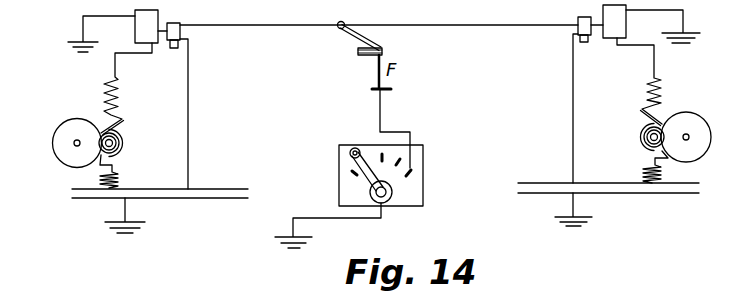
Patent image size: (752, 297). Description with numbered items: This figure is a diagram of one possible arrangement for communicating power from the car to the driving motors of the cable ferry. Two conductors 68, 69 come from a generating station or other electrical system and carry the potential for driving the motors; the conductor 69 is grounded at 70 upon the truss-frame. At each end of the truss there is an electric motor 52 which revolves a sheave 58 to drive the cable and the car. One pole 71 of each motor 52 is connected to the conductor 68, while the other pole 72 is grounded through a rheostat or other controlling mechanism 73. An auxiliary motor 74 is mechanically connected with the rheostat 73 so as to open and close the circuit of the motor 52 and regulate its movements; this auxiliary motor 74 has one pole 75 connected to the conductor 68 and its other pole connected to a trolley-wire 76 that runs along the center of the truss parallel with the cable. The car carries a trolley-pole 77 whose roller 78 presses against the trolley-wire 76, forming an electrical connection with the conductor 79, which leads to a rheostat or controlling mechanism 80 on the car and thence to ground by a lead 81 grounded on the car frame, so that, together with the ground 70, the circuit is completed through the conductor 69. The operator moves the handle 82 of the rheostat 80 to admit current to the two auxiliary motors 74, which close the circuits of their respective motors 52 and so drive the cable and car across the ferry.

The electric motor 52 is at (641, 137).
The sheave 58 is at (713, 127).
The conductor 68 is at (540, 177).
The conductor 69 is at (535, 204).
The ground 70 is at (587, 205).
The motor pole 71 is at (673, 178).
The motor pole 72 is at (696, 24).
The rheostat 73 is at (380, 24).
The auxiliary motor 74 is at (573, 16).
The auxiliary motor pole 75 is at (566, 118).
The trolley-wire 76 is at (377, 21).
The trolley-pole 77 is at (369, 38).
The roller 78 is at (339, 30).
The conductor 79 is at (384, 117).
The rheostat 80 is at (381, 175).
The lead 81 is at (311, 218).
The handle 82 is at (370, 176).